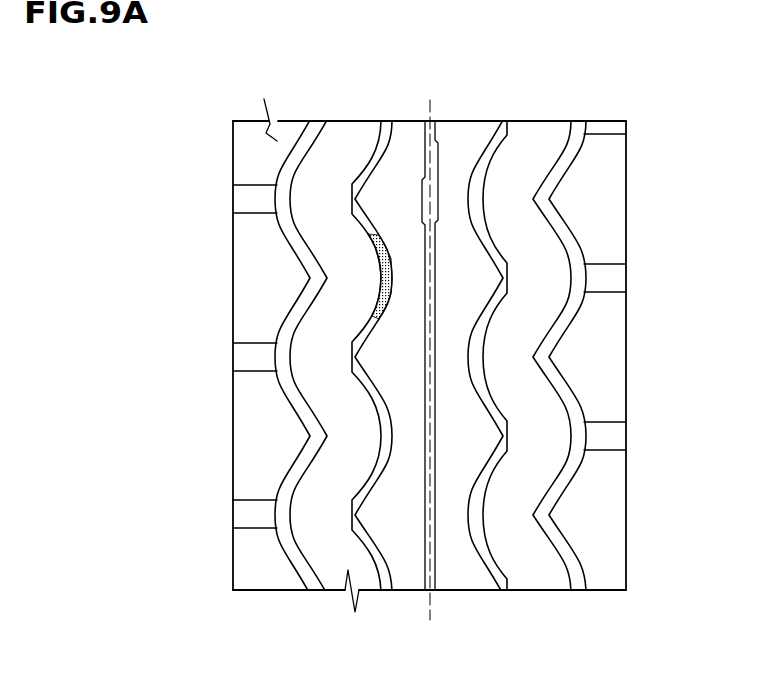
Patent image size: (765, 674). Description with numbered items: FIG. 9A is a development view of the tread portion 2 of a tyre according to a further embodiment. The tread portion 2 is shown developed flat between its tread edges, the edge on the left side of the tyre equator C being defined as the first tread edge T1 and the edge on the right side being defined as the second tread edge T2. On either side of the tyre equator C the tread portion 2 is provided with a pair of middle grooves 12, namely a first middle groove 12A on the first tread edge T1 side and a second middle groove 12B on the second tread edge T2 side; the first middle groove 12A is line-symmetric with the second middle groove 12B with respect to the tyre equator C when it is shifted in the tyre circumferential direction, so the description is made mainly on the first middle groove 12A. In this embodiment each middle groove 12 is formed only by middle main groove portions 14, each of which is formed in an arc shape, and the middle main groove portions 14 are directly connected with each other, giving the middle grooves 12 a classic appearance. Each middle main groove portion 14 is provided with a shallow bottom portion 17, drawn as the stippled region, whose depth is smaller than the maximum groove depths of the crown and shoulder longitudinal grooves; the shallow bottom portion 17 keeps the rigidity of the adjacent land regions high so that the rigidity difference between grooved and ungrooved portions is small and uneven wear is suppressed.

The tread portion 2 is at (608, 96).
The first tread edge T1 is at (231, 152).
The second tread edge T2 is at (628, 152).
The tyre equator C is at (429, 346).
The middle grooves 12 is at (311, 321).
The first middle groove 12A is at (368, 166).
The second middle groove 12B is at (475, 195).
The middle main groove portions 14 is at (482, 200).
The shallow bottom portion 17 is at (385, 292).